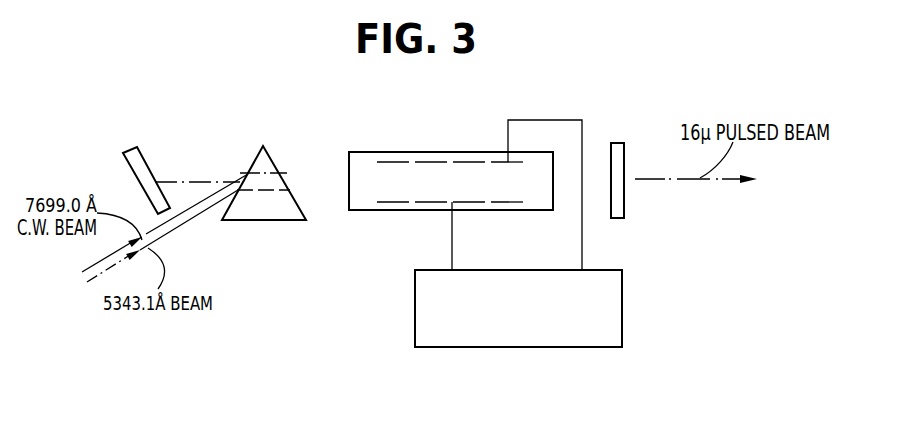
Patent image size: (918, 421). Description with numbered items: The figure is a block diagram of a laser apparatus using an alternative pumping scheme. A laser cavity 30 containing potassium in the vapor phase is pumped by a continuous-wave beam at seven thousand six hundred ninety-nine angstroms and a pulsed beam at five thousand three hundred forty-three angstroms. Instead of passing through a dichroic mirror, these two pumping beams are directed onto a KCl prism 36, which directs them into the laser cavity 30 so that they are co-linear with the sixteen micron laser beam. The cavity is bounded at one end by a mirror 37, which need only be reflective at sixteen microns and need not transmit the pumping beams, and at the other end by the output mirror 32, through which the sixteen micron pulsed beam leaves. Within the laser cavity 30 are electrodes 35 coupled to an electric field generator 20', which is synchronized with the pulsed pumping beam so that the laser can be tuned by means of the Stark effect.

The mirror 37 is at (129, 148).
The KCl prism 36 is at (260, 151).
The laser cavity 30 is at (362, 152).
The electrodes 35 is at (432, 162).
The output mirror 32 is at (620, 143).
The electric field generator 20' is at (543, 308).